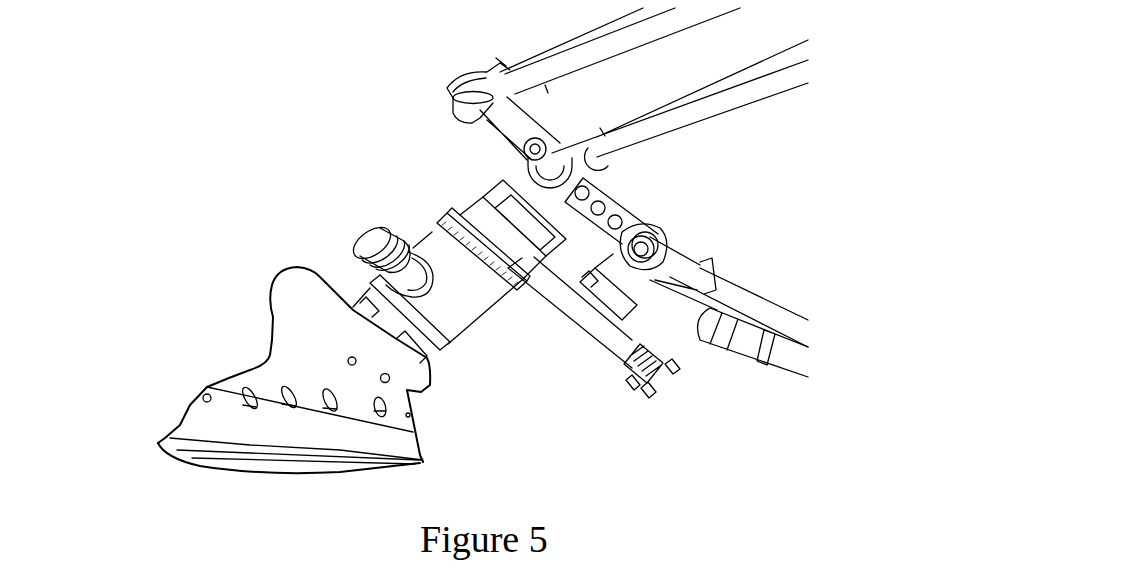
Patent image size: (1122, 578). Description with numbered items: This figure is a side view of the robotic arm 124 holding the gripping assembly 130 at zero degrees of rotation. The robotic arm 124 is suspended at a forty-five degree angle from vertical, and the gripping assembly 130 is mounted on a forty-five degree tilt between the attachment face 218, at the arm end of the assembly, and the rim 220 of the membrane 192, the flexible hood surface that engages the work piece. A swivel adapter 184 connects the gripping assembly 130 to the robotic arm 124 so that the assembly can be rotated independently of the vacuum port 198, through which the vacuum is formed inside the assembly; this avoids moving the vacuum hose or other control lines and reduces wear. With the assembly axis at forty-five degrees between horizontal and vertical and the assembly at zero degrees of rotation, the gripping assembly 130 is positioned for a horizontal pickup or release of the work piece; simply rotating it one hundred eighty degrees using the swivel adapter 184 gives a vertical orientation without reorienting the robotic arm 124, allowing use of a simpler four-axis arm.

The robotic arm 124 is at (423, 80).
The attachment face 218 is at (470, 181).
The vacuum port 198 is at (345, 236).
The gripping assembly 130 is at (175, 341).
The membrane 192 is at (320, 347).
The swivel adapter 184 is at (480, 348).
The rim 220 is at (440, 458).